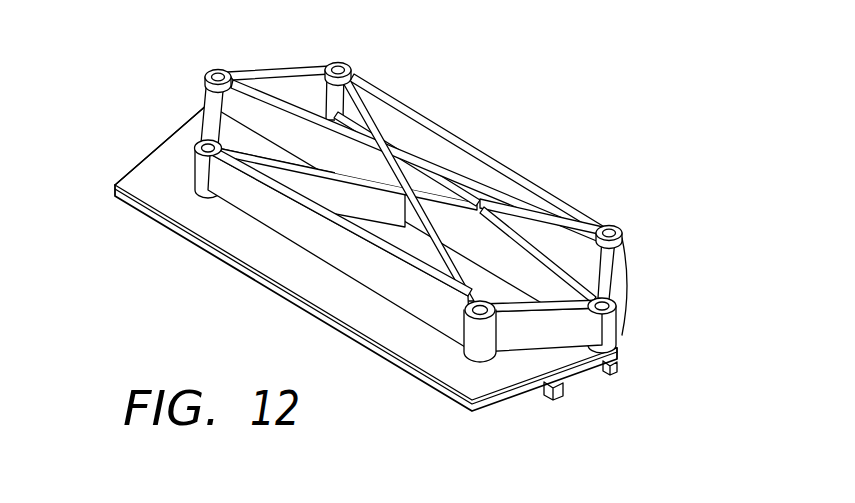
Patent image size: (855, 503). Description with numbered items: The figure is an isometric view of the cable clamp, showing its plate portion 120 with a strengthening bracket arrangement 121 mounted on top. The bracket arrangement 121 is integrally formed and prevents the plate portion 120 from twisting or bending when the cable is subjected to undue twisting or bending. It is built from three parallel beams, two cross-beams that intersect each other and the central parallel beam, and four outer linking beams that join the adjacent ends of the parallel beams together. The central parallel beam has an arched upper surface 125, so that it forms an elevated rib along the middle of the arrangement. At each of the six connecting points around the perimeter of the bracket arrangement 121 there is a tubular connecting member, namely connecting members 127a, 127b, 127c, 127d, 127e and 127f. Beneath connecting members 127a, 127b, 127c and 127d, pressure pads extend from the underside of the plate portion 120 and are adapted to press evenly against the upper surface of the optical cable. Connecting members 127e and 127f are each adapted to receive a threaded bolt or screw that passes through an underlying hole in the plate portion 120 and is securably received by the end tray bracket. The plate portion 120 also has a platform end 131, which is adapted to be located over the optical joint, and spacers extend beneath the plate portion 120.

The plate portion 120 is at (288, 298).
The strengthening bracket arrangement 121 is at (552, 135).
The arched upper surface 125 is at (422, 170).
The tubular connecting member 127a is at (339, 64).
The tubular connecting member 127b is at (185, 143).
The tubular connecting member 127c is at (481, 337).
The tubular connecting member 127d is at (623, 232).
The tubular connecting member 127e is at (218, 72).
The tubular connecting member 127f is at (623, 296).
The platform end 131 is at (140, 183).